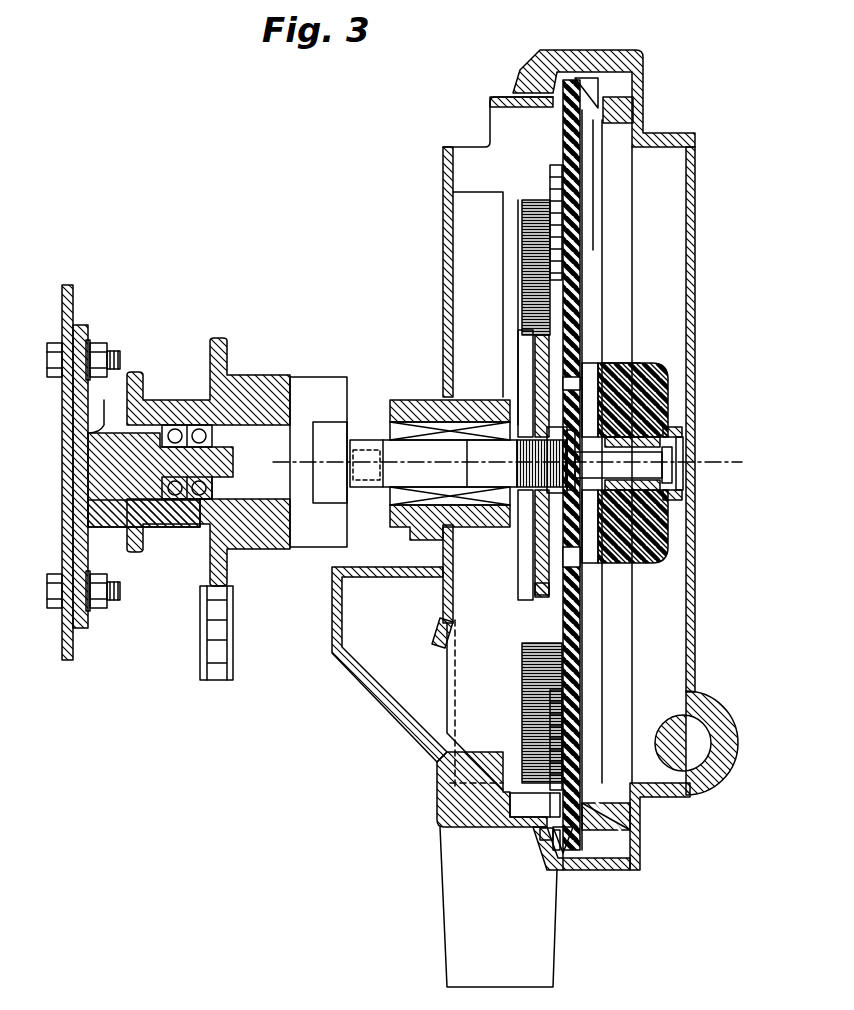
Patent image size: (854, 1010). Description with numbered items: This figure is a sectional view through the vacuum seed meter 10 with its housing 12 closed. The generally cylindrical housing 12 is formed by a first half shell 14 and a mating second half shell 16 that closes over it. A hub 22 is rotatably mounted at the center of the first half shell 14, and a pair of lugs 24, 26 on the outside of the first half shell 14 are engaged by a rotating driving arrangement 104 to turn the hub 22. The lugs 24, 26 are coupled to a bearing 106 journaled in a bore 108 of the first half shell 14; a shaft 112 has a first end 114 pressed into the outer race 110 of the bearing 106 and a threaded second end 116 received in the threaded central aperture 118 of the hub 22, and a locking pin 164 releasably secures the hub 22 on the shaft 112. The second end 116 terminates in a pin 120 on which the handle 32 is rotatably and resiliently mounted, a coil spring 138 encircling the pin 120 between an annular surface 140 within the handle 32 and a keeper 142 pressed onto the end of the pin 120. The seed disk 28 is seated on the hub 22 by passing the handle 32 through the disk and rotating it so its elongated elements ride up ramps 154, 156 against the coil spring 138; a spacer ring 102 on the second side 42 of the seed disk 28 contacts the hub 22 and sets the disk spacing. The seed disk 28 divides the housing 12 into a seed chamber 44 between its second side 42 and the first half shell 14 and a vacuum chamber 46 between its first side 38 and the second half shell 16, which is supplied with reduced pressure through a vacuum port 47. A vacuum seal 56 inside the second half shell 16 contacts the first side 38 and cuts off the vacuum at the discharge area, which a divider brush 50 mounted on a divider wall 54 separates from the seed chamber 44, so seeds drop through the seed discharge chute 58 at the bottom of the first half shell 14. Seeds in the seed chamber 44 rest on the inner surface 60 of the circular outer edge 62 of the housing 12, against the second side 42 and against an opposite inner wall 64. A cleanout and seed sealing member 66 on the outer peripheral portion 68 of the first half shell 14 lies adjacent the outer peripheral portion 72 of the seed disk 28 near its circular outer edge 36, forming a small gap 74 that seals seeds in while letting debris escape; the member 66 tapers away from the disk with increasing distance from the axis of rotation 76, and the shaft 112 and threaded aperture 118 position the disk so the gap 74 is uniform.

The vacuum seed meter 10 is at (338, 277).
The housing 12 is at (605, 873).
The first half shell 14 is at (442, 838).
The second half shell 16 is at (643, 830).
The hub 22 is at (540, 558).
The lug 24 is at (305, 385).
The lug 26 is at (303, 532).
The seed disk 28 is at (584, 250).
The handle 32 is at (672, 375).
The circular outer edge 36 is at (577, 878).
The first side 38 is at (575, 713).
The second side 42 is at (563, 635).
The seed chamber 44 is at (452, 700).
The vacuum chamber 46 is at (692, 566).
The vacuum port 47 is at (698, 758).
The divider brush 50 is at (537, 675).
The divider wall 54 is at (510, 292).
The vacuum seal 56 is at (588, 182).
The seed discharge chute 58 is at (540, 972).
The inner surface 60 is at (508, 820).
The circular outer edge 62 is at (548, 855).
The inner wall 64 is at (362, 666).
The cleanout and seed sealing member 66 is at (557, 107).
The outer peripheral portion 68 is at (550, 838).
The outer peripheral portion 72 is at (568, 62).
The gap 74 is at (563, 875).
The axis of rotation 76 is at (716, 463).
The spacer ring 102 is at (577, 567).
The rotating driving arrangement 104 is at (178, 518).
The bearing 106 is at (408, 508).
The bore 108 is at (405, 418).
The outer race 110 is at (473, 505).
The shaft 112 is at (518, 430).
The first end 114 is at (490, 447).
The threaded second end 116 is at (642, 492).
The threaded central aperture 118 is at (533, 556).
The pin 120 is at (661, 464).
The coil spring 138 is at (668, 490).
The annular surface 140 is at (625, 390).
The keeper 142 is at (682, 440).
The ramp 154 is at (580, 370).
The ramp 156 is at (590, 560).
The locking pin 164 is at (533, 590).